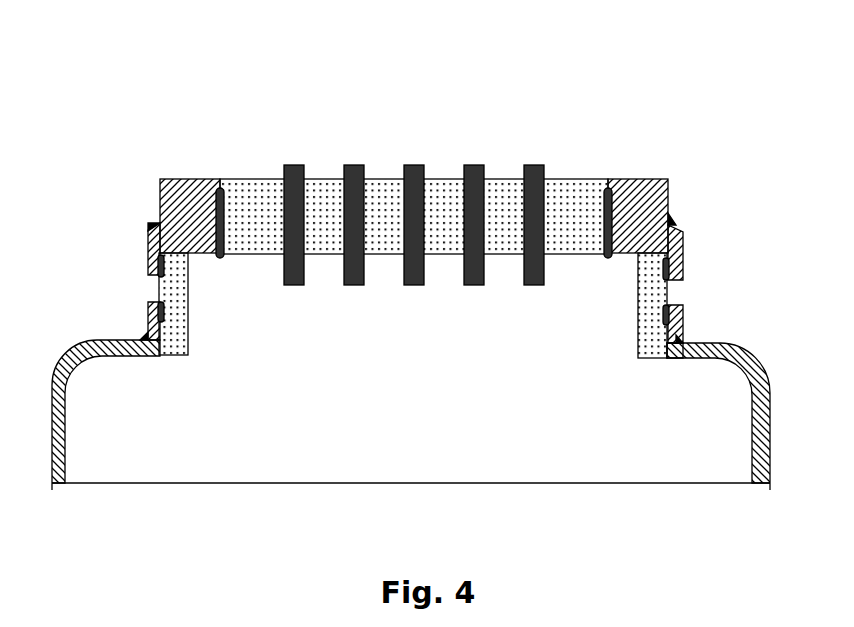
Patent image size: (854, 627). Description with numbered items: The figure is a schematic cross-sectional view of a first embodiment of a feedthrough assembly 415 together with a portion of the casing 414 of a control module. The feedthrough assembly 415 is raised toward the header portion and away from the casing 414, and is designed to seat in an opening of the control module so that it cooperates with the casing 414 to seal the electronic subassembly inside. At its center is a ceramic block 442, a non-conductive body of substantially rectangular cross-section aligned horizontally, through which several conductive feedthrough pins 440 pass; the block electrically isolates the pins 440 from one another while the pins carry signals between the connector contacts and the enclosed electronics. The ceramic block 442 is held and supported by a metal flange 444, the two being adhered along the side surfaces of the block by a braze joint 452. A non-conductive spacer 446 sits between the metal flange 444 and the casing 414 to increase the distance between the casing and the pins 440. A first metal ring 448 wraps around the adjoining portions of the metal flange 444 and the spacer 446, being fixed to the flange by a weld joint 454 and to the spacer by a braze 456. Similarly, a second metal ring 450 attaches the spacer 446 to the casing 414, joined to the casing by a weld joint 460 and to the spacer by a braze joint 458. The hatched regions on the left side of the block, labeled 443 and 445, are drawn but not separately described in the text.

The casing 414 is at (752, 428).
The feedthrough assembly 415 is at (139, 192).
The conductive feedthrough pins 440 is at (413, 165).
The ceramic block 442 is at (553, 178).
The first ferrule portion 443 is at (240, 178).
The metal flange 444 is at (637, 178).
The first seal member 445 is at (245, 255).
The non-conductive spacer 446 is at (668, 292).
The first metal ring 448 is at (684, 240).
The second metal ring 450 is at (684, 342).
The braze joint 452 is at (607, 258).
The weld joint 454 is at (672, 214).
The braze 456 is at (669, 262).
The braze joint 458 is at (684, 318).
The weld joint 460 is at (683, 350).